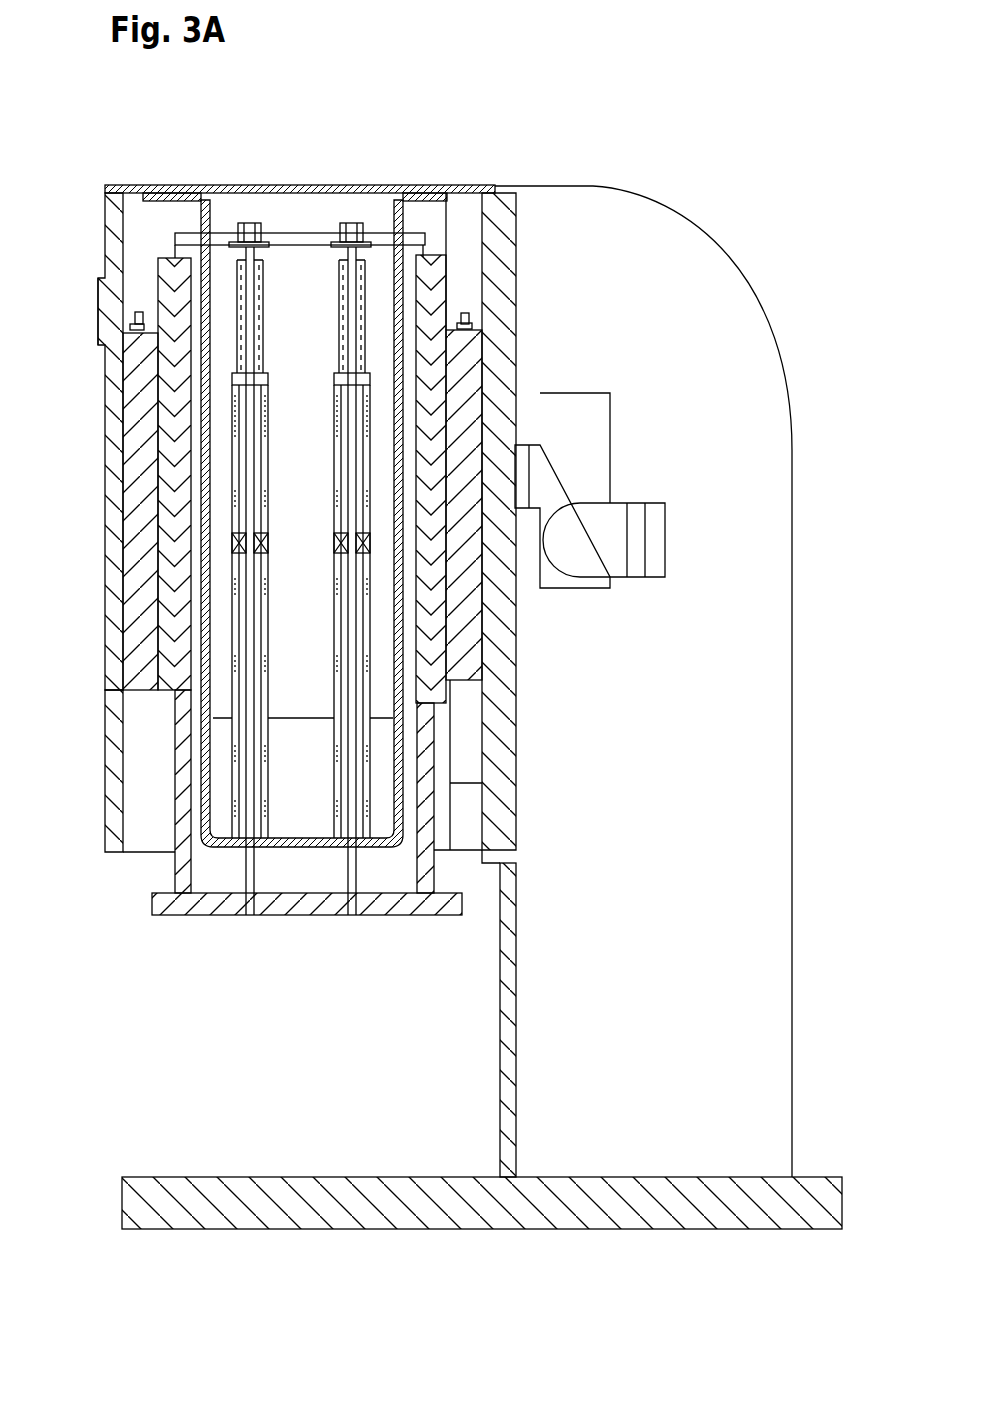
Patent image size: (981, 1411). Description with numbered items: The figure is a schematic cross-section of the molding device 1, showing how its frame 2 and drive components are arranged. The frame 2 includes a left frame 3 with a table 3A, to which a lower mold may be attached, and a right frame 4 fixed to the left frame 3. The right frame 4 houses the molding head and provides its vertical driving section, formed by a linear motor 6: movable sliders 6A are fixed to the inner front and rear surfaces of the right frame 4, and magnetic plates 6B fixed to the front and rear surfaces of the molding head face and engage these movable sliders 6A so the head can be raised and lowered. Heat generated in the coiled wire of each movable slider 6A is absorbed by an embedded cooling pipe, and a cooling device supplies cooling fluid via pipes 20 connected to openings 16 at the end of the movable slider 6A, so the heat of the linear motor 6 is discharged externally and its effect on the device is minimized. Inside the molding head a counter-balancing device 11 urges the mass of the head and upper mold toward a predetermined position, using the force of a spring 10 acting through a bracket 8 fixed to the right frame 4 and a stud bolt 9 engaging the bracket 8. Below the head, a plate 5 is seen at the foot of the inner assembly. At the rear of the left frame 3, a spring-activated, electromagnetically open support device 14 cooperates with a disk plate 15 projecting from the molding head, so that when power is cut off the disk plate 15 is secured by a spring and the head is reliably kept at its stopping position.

The molding device 1 is at (372, 90).
The frame 2 is at (458, 959).
The left frame 3 is at (508, 1062).
The table 3A is at (152, 1187).
The right frame 4 is at (140, 833).
The heater mounting plate 5 is at (328, 915).
The linear motor 6 is at (324, 543).
The movable slider 6A is at (137, 393).
The magnetic plate 6B is at (158, 438).
The bracket 8 is at (213, 212).
The stud bolt 9 is at (252, 585).
The spring 10 is at (237, 640).
The counter-balancing device 11 is at (321, 569).
The support device 14 is at (583, 517).
The disk plate 15 is at (597, 427).
The opening 16 is at (127, 329).
The pipe 20 is at (130, 315).